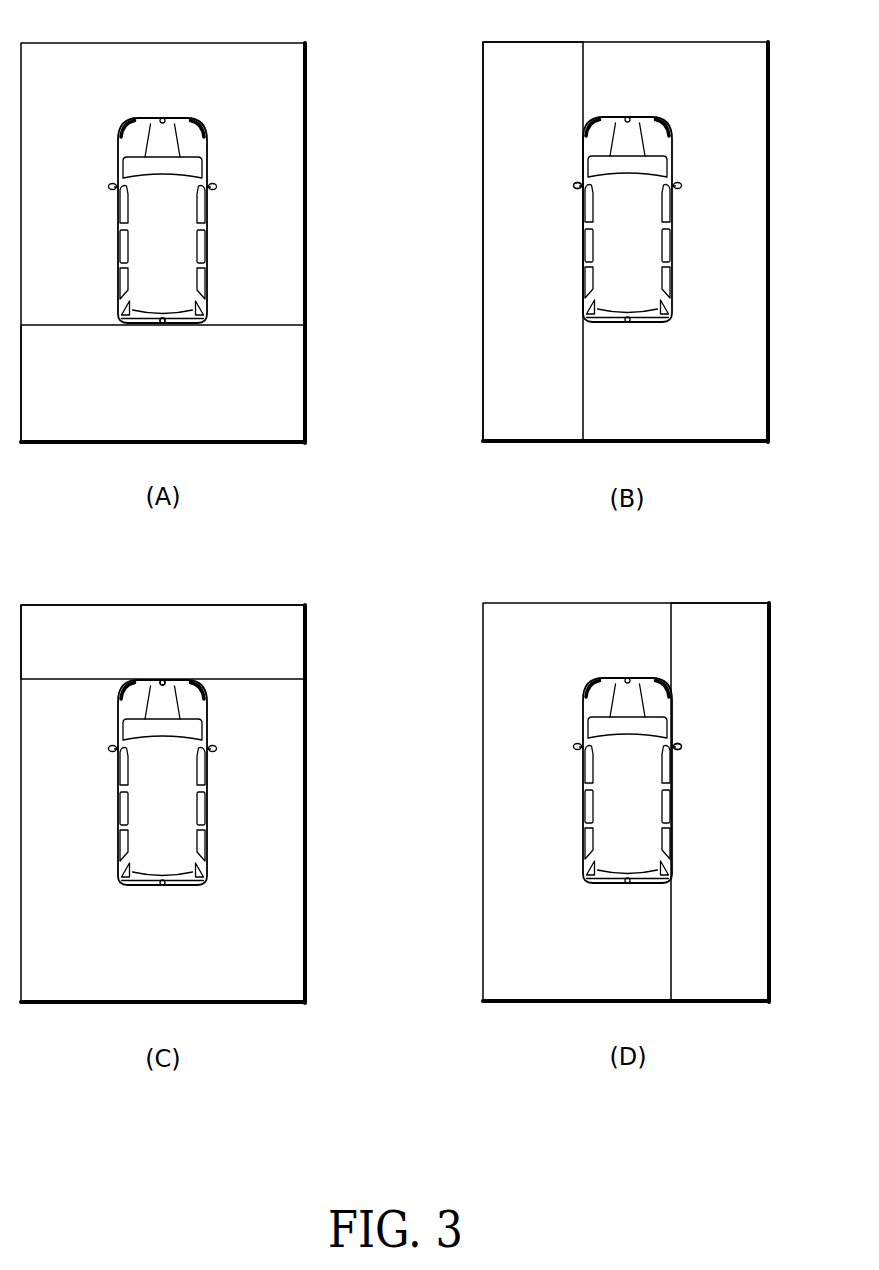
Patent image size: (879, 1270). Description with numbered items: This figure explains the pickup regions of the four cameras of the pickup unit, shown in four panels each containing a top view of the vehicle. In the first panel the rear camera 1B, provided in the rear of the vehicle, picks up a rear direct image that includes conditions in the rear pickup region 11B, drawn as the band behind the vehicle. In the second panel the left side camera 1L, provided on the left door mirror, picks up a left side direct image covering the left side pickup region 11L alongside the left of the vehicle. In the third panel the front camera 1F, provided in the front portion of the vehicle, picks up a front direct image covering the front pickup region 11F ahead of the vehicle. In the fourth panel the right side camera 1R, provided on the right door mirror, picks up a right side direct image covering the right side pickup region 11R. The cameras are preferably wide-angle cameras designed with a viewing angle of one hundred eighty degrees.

The rear camera 1B is at (163, 325).
The left side camera 1L is at (575, 186).
The front camera 1F is at (163, 678).
The right side camera 1R is at (680, 747).
The rear pickup region 11B is at (68, 427).
The left side pickup region 11L is at (532, 53).
The front pickup region 11F is at (265, 615).
The right side pickup region 11R is at (757, 658).